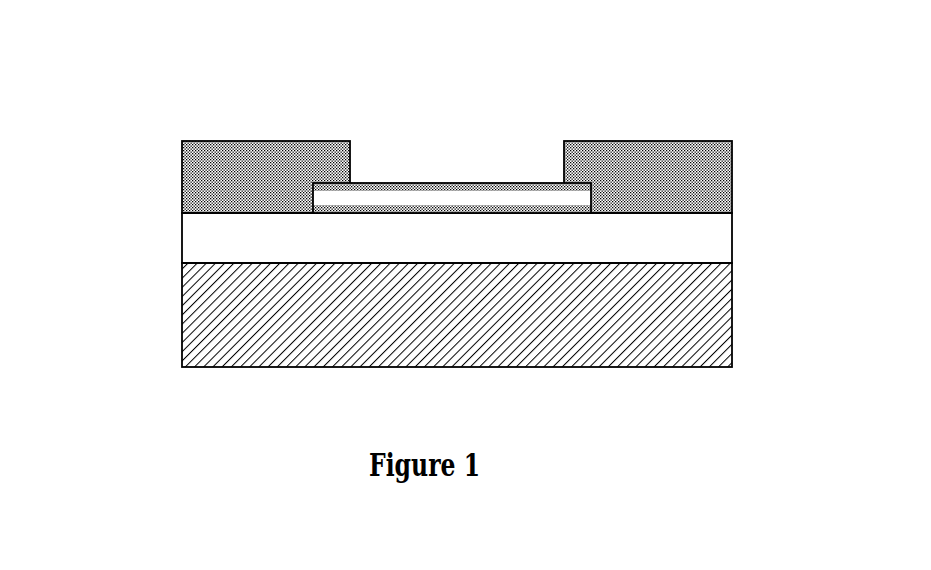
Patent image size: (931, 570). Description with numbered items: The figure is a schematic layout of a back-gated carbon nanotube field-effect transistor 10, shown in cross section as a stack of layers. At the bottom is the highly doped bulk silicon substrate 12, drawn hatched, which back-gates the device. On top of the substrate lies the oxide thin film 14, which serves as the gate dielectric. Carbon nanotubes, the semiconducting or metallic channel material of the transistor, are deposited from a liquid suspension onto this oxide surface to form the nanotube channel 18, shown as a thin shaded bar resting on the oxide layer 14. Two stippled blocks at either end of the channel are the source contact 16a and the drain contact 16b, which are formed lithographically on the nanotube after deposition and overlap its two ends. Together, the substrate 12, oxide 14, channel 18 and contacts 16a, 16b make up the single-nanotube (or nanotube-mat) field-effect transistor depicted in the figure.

The thin film transistor device 10 is at (147, 92).
The substrate 12 is at (697, 314).
The dielectric layer 14 is at (693, 241).
The source electrode 16a is at (225, 183).
The drain electrode 16b is at (692, 183).
The semiconductor channel layer 18 is at (447, 205).